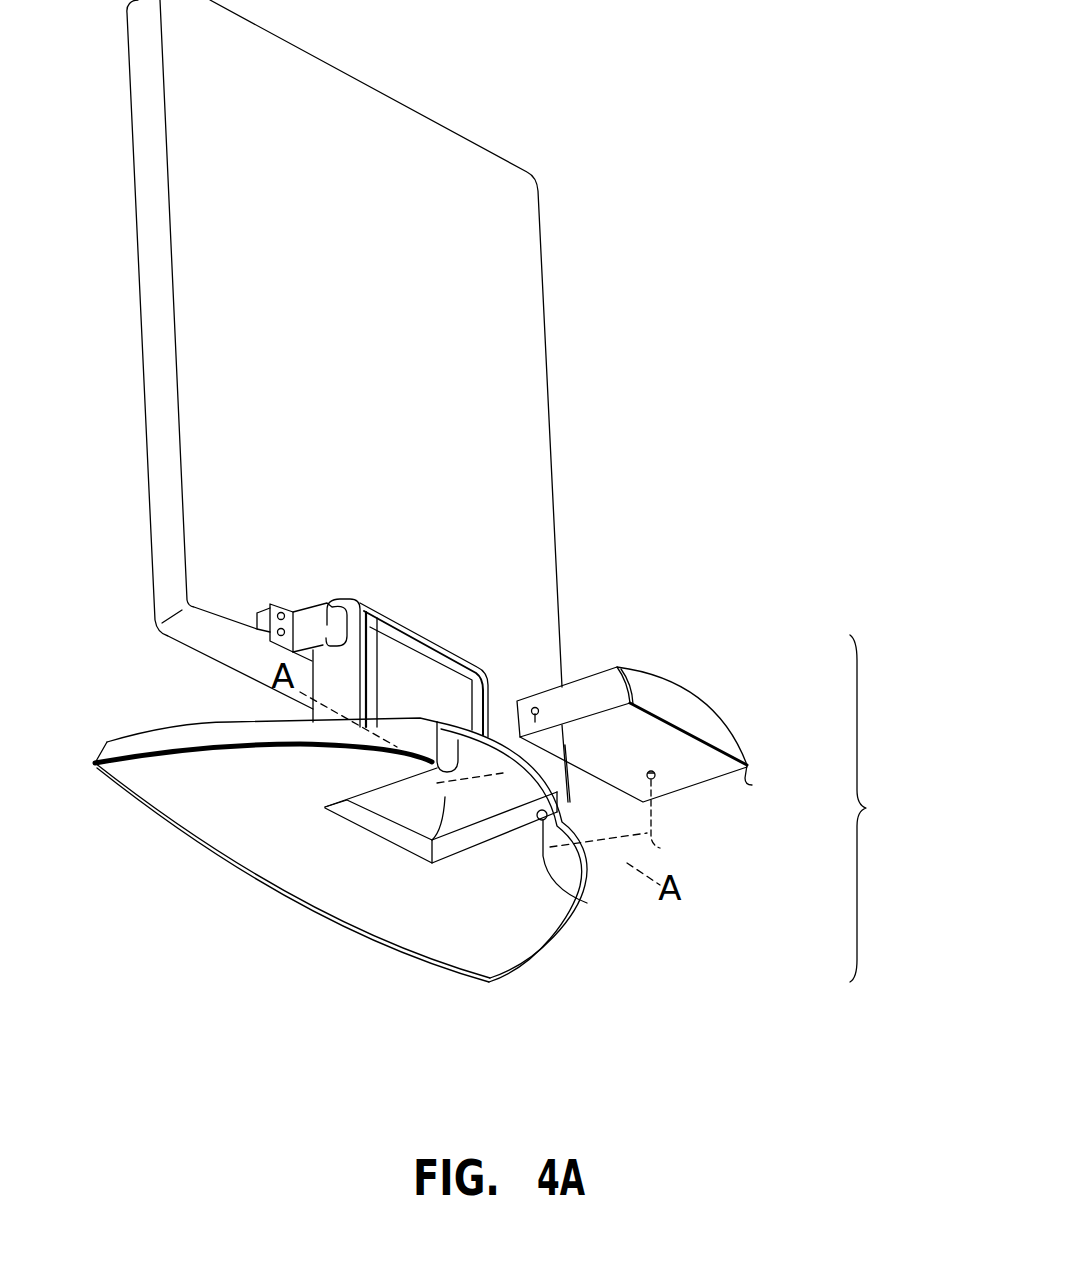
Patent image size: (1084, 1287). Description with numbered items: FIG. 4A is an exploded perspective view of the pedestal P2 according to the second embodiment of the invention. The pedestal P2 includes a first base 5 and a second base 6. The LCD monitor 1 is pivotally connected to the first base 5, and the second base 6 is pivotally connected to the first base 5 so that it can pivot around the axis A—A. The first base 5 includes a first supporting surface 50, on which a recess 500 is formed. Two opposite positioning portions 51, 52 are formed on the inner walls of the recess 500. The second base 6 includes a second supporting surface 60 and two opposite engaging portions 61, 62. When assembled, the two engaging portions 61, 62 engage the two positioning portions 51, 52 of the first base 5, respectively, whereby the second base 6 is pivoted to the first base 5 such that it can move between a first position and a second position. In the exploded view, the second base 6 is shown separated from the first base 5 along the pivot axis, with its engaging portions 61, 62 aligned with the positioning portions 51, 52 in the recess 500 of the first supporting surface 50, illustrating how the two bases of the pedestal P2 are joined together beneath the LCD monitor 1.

The LCD monitor 1 is at (140, 553).
The first base 5 is at (382, 817).
The first supporting surface 50 is at (483, 937).
The recess 500 is at (432, 840).
The positioning portion 51 is at (458, 760).
The positioning portion 52 is at (578, 872).
The second base 6 is at (660, 733).
The second supporting surface 60 is at (752, 785).
The engaging portion 61 is at (515, 703).
The engaging portion 62 is at (660, 848).
The pedestal P2 is at (877, 828).